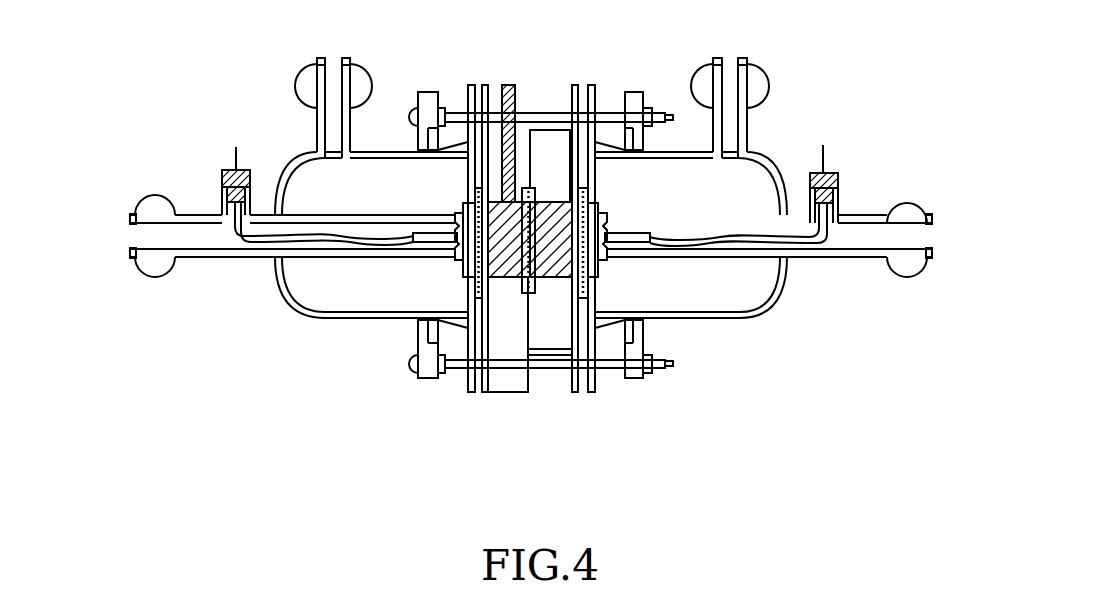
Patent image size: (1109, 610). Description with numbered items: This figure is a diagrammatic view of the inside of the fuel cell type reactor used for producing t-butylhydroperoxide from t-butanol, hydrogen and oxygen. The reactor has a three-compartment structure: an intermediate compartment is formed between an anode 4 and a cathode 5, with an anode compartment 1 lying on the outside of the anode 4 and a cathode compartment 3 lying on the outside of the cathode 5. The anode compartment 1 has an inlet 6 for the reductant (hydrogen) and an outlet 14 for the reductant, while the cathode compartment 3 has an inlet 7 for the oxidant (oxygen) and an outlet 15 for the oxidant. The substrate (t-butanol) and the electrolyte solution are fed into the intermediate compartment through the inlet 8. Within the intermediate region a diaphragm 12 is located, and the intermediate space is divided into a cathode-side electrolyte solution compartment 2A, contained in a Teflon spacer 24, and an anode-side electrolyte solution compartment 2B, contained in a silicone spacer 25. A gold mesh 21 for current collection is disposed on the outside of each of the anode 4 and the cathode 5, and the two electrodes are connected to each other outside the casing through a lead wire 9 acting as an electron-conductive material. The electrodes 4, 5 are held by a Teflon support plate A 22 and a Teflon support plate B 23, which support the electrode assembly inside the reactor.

The anode compartment 1 is at (757, 177).
The cathode-side electrolyte solution compartment 2A is at (507, 263).
The anode-side electrolyte solution compartment 2B is at (562, 213).
The cathode compartment 3 is at (302, 182).
The anode 4 is at (593, 180).
The cathode 5 is at (475, 183).
The inlet for a reductant 6 is at (930, 262).
The inlet for an oxidant 7 is at (131, 258).
The inlet for a substrate and an electrolyte solution 8 is at (512, 85).
The lead wire 9 is at (236, 149).
The diaphragm 12 is at (532, 188).
The outlet for a reductant 14 is at (750, 62).
The outlet for an oxidant 15 is at (317, 62).
The gold mesh 21 is at (467, 267).
The Teflon support plate A 22 is at (470, 392).
The Teflon support plate B 23 is at (485, 392).
The Teflon spacer 24 is at (490, 350).
The silicone spacer 25 is at (557, 322).